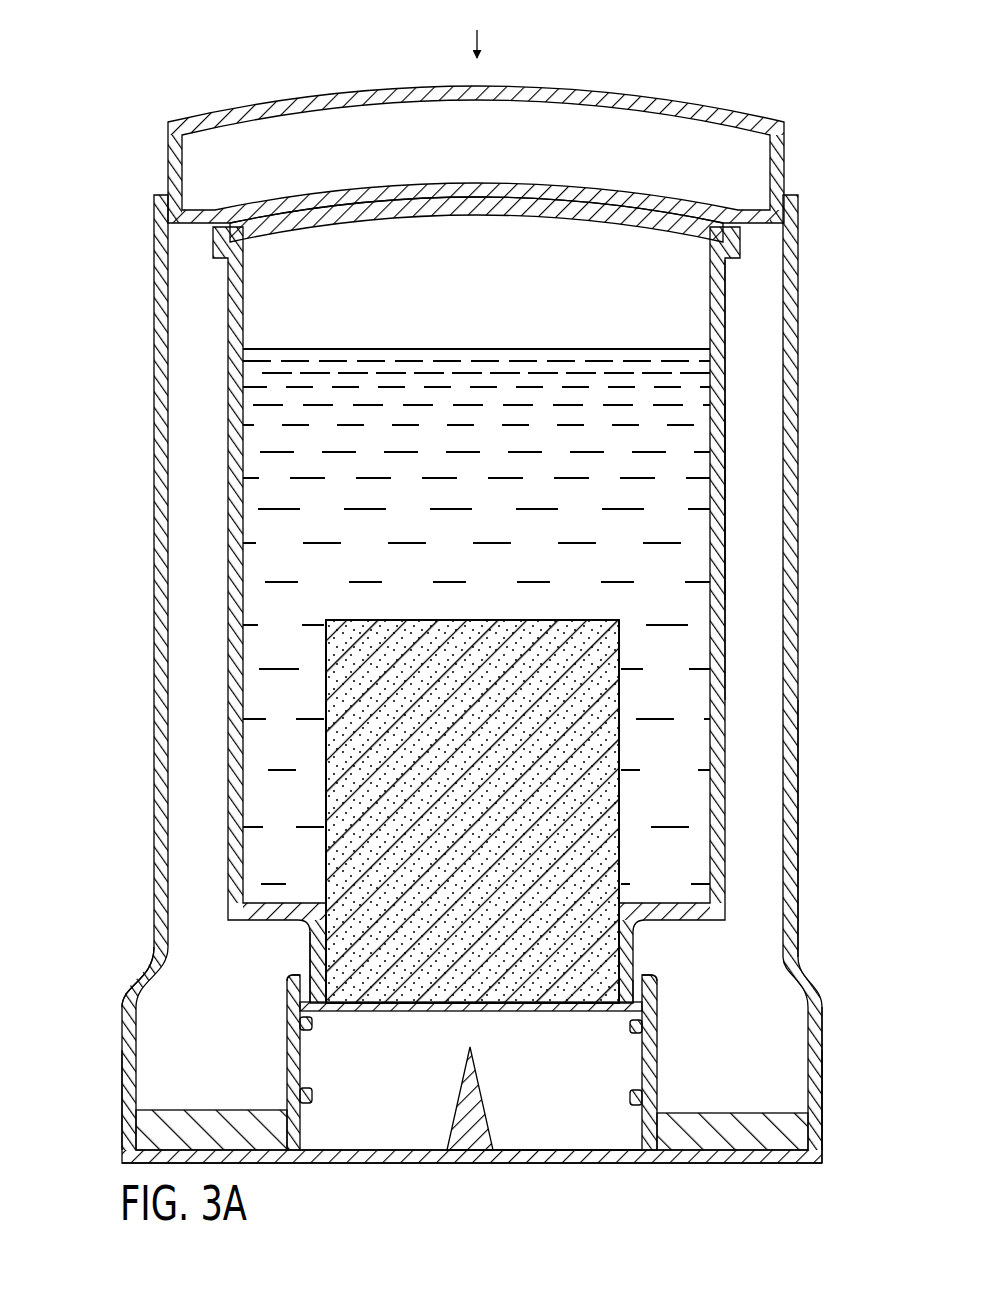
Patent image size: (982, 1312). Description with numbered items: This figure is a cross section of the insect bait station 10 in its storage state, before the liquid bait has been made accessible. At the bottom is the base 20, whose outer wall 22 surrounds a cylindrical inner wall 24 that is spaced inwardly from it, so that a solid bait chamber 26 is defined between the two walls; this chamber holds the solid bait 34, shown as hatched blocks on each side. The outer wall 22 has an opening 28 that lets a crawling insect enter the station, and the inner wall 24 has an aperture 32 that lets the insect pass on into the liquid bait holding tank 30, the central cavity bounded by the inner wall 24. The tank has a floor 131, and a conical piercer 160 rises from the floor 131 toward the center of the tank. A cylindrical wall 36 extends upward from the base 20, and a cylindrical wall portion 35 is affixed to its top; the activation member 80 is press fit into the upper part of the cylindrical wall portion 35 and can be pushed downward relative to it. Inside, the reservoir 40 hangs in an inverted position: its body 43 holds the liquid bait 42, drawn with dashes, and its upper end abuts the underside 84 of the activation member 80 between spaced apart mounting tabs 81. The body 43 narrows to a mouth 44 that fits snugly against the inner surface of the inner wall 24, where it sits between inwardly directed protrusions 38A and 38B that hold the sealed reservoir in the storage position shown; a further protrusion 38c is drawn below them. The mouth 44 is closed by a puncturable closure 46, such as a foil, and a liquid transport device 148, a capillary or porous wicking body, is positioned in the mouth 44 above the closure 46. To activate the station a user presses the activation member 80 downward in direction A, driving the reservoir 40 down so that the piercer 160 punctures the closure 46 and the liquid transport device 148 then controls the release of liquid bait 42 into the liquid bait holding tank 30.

The insect bait station 10 is at (465, 603).
The base 20 is at (95, 1038).
The outer wall 22 is at (822, 1032).
The cylindrical inner wall 24 is at (290, 995).
The solid bait chamber 26 is at (165, 1002).
The opening 28 is at (118, 1090).
The liquid bait holding tank 30 is at (430, 1094).
The aperture 32 is at (290, 1053).
The solid bait 34 is at (145, 1130).
The cylindrical wall portion 35 is at (798, 376).
The cylindrical wall 36 is at (798, 887).
The inwardly directed protrusion 38A is at (640, 985).
The inwardly directed protrusion 38B is at (316, 1022).
The lower detent 38c is at (318, 1097).
The reservoir 40 is at (228, 334).
The liquid bait 42 is at (255, 492).
The body 43 is at (725, 467).
The mouth 44 is at (310, 937).
The closure 46 is at (522, 1012).
The activation member 80 is at (652, 100).
The mounting tab 81 is at (760, 264).
The underside 84 is at (378, 198).
The floor 131 is at (578, 1147).
The liquid transport device 148 is at (619, 702).
The conical piercer 160 is at (482, 1120).
The direction A is at (476, 30).